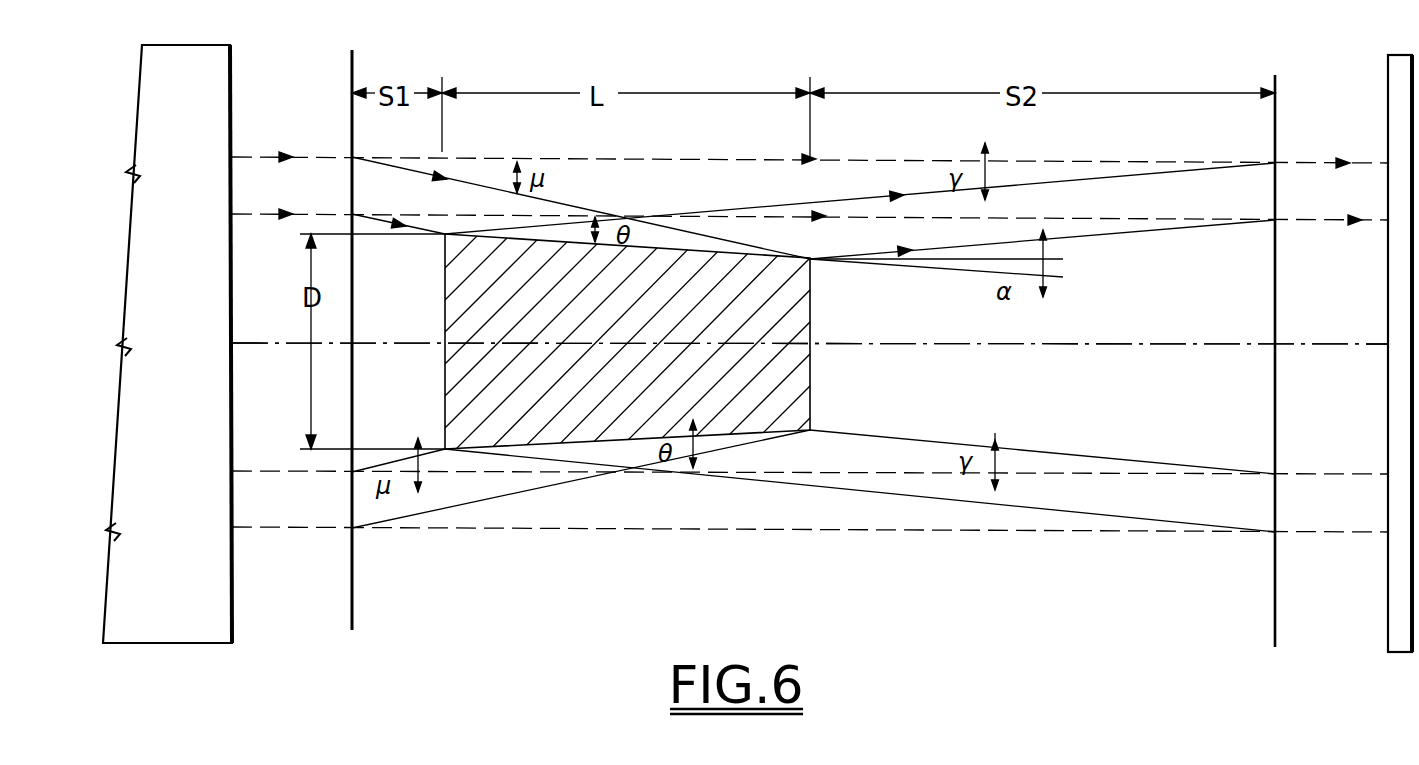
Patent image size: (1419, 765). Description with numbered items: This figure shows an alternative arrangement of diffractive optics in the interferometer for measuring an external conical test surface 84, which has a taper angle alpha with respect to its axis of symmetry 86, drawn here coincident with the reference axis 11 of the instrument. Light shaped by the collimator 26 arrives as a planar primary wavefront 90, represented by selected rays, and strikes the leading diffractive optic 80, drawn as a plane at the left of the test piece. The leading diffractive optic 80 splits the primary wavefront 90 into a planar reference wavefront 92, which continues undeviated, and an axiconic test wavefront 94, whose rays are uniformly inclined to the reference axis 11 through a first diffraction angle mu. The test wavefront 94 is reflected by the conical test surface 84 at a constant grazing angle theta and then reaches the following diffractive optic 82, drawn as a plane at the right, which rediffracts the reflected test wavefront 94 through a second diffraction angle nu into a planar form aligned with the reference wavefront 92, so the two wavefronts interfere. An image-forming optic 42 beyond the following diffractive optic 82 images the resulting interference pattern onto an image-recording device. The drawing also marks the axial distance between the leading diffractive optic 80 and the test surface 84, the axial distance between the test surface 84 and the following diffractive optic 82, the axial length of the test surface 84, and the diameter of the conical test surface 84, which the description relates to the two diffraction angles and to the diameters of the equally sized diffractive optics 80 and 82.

The reference axis 11 is at (1175, 344).
The collimator 26 is at (228, 573).
The image-forming optic 42 is at (1390, 634).
The leading diffractive optic 80 is at (353, 391).
The following diffractive optic 82 is at (1277, 398).
The external conical test surface 84 is at (607, 466).
The axis of symmetry 86 is at (810, 343).
The planar primary wavefront 90 is at (262, 212).
The planar reference wavefront 92 is at (1098, 219).
The axiconic test wavefront 94 is at (1108, 236).